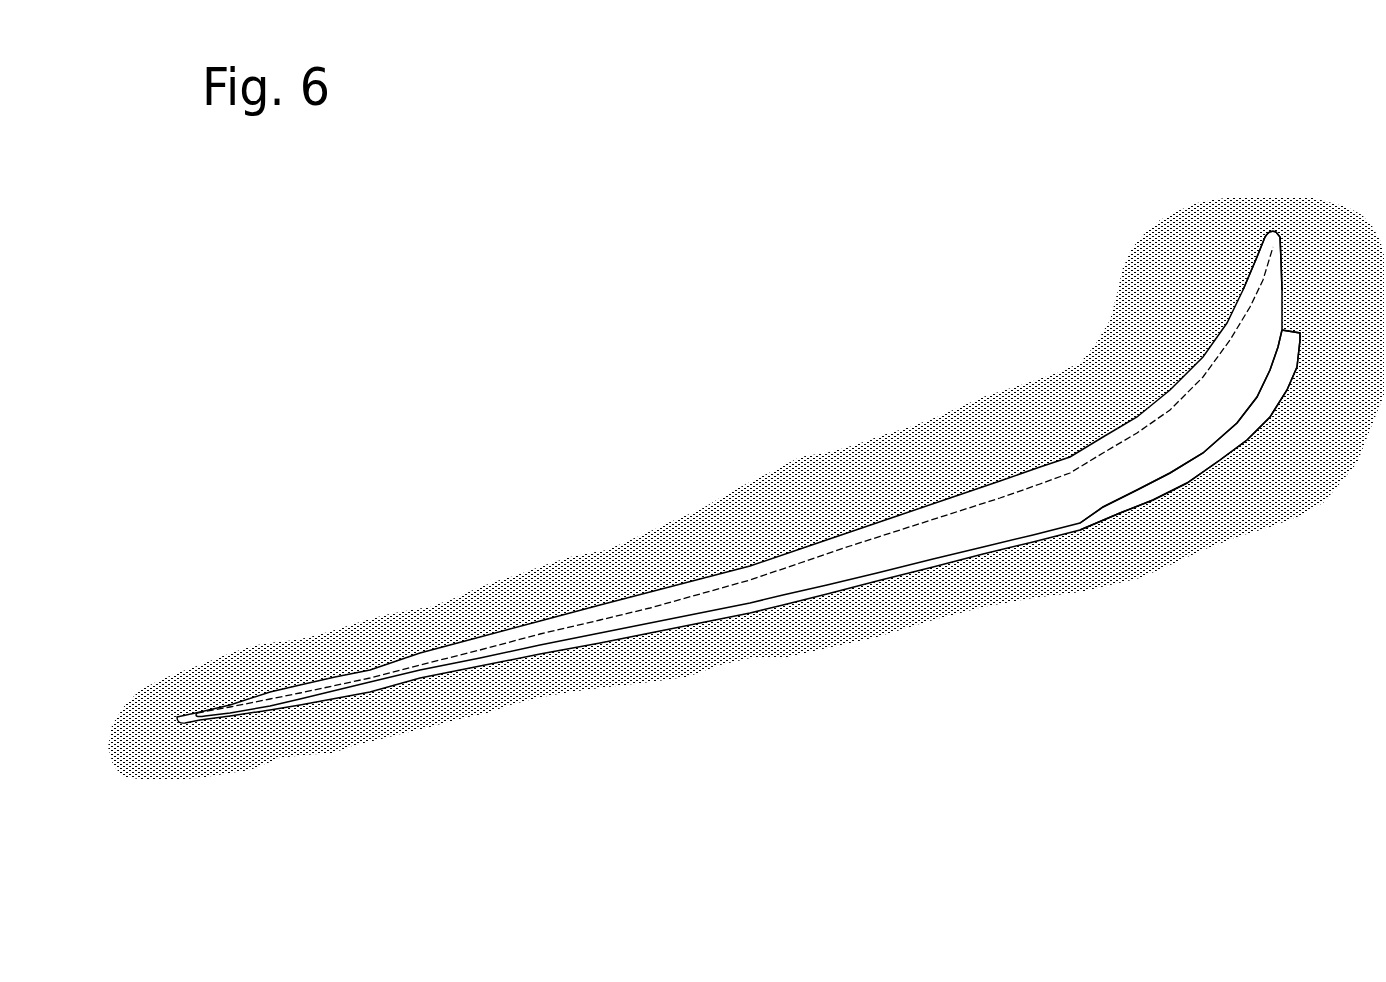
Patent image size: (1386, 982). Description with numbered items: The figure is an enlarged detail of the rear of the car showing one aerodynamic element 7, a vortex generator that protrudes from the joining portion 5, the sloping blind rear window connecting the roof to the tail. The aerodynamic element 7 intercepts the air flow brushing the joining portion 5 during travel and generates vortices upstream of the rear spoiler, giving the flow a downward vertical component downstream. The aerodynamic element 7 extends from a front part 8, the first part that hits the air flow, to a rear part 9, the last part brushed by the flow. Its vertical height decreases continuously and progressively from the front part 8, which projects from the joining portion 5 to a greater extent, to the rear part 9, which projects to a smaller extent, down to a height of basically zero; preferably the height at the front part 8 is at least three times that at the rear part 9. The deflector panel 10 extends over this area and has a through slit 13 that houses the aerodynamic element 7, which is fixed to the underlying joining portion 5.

The joining portion 5 is at (858, 476).
The aerodynamic element 7 is at (1142, 751).
The front part 8 is at (1267, 243).
The rear part 9 is at (228, 710).
The deflector panel 10 is at (700, 552).
The through slit 13 is at (1186, 492).